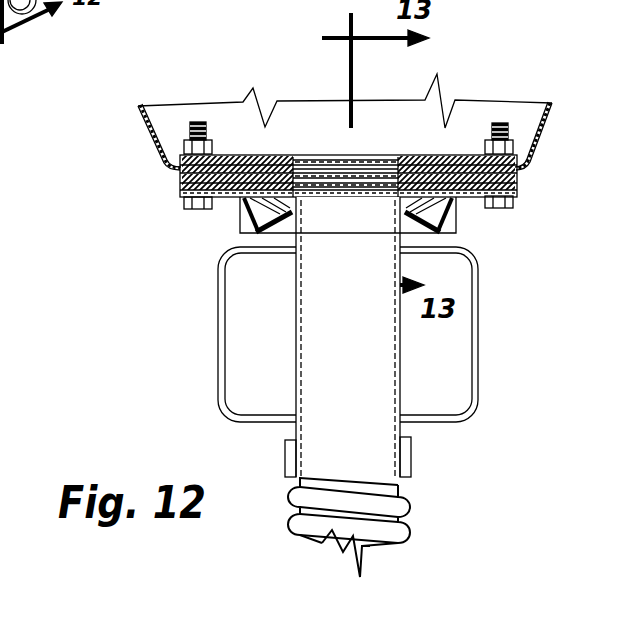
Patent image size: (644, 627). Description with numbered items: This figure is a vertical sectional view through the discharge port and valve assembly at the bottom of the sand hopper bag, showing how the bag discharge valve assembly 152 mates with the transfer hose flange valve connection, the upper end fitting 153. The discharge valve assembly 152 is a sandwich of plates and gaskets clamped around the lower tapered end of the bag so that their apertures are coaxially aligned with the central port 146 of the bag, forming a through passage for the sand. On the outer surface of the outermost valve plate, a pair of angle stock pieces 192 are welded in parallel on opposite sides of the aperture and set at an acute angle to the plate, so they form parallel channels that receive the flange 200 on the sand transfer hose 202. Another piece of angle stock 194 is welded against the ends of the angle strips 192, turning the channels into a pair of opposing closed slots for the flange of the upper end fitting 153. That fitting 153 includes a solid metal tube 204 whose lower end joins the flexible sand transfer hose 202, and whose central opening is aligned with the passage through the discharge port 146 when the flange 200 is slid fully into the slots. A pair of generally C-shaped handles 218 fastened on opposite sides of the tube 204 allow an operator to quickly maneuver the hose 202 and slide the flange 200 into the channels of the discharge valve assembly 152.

The central port 146 is at (372, 152).
The discharge valve assembly 152 is at (155, 182).
The upper end fitting 153 is at (486, 238).
The angle stock piece 194 is at (513, 196).
The angle stock pieces 192 is at (458, 213).
The flange 200 is at (240, 199).
The C shaped handles 218 is at (220, 346).
The solid metal tube 204 is at (297, 392).
The sand transfer hose 202 is at (414, 505).